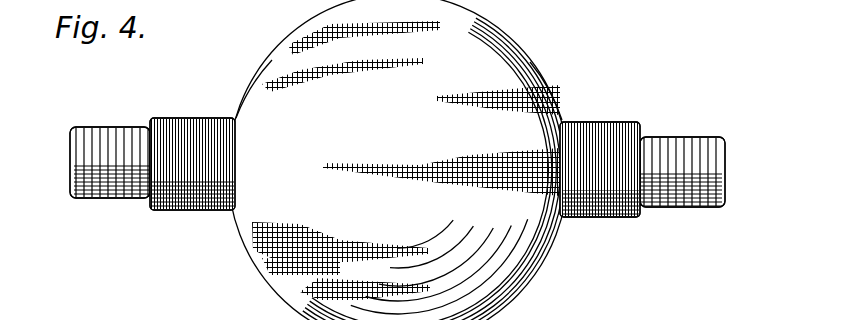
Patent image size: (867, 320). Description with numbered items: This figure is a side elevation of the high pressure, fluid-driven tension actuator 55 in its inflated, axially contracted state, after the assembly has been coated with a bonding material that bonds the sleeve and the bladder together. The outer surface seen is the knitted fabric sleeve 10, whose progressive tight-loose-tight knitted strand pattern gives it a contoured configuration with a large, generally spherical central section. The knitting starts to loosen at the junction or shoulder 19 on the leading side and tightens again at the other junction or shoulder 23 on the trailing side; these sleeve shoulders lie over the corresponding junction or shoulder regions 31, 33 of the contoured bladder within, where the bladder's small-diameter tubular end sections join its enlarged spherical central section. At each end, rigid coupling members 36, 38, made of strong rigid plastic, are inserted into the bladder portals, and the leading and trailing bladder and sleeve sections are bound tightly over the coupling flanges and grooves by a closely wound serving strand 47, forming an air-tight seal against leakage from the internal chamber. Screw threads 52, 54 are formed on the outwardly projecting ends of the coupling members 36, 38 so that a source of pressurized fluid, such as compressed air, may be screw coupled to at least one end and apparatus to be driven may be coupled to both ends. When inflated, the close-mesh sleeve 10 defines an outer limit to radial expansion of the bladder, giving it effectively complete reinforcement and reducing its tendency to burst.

The knitted sleeve 10 is at (535, 278).
The junction or shoulder 19 is at (240, 82).
The junction or shoulder region 31 is at (235, 123).
The junction or shoulder 23 is at (592, 83).
The junction or shoulder region 33 is at (562, 125).
The rigid coupling member 36 is at (93, 165).
The rigid coupling member 38 is at (698, 166).
The serving strand 47 is at (182, 118).
The screw threads 52 is at (93, 128).
The screw threads 54 is at (697, 137).
The high pressure tension actuator 55 is at (640, 268).